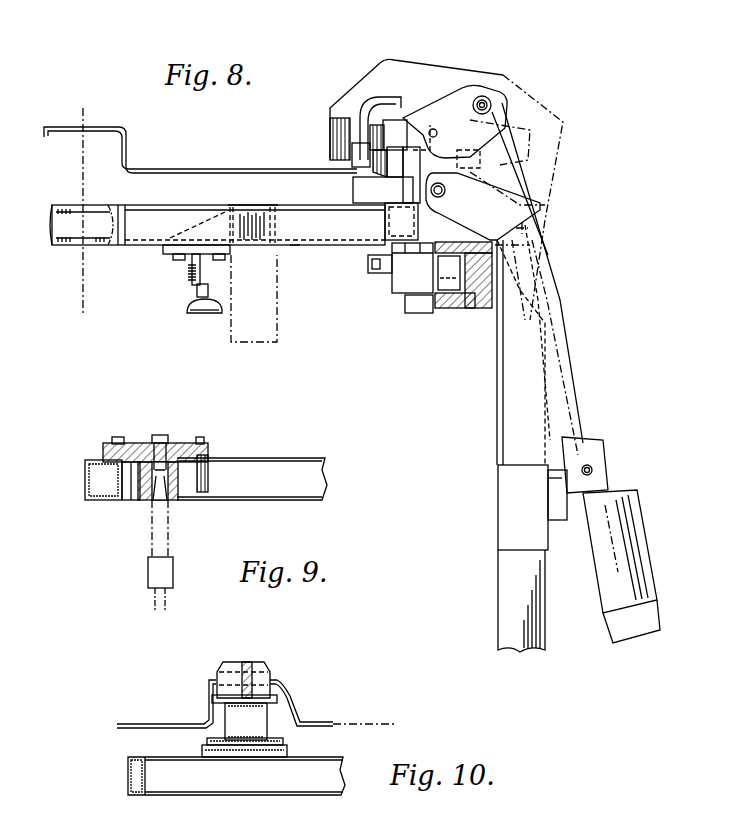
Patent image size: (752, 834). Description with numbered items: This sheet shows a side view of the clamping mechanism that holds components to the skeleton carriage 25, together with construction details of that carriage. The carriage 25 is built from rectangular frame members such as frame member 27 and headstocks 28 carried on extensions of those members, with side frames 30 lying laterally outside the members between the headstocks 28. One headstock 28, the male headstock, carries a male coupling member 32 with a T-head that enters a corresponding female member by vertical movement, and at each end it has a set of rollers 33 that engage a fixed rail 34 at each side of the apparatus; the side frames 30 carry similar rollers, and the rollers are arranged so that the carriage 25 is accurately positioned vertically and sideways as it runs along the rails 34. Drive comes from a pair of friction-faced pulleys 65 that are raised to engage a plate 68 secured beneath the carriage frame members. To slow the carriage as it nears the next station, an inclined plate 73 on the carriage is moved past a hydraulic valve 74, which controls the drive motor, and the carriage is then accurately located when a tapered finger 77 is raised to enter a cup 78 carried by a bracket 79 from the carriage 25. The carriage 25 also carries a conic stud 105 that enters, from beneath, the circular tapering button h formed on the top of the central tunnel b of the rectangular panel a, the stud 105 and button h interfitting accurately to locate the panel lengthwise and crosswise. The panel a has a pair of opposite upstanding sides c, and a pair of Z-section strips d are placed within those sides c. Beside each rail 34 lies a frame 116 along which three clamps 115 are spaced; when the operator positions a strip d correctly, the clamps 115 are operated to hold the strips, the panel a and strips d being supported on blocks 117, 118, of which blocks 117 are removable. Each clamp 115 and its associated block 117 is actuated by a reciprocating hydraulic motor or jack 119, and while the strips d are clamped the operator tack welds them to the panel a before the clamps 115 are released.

In FIG. 8, the skeleton carriage 25 is at (128, 252).
In FIG. 9, the skeleton carriage 25 is at (306, 451).
In FIG. 10, the rectangular frame member 27 is at (135, 775).
In FIG. 8, the headstock 28 is at (294, 232).
In FIG. 8, the side frame 30 is at (383, 222).
In FIG. 8, the male coupling member 32 is at (78, 230).
In FIG. 8, the rollers 33 is at (421, 315).
In FIG. 8, the rail 34 is at (466, 314).
In FIG. 8, the pulley 65 is at (241, 323).
In FIG. 8, the plate 68 is at (249, 270).
In FIG. 8, the inclined plate 73 is at (192, 276).
In FIG. 8, the hydraulic valve 74 is at (197, 311).
In FIG. 9, the tapered finger 77 is at (155, 505).
In FIG. 9, the cup 78 is at (137, 487).
In FIG. 9, the bracket 79 is at (138, 445).
In FIG. 10, the conic stud 105 is at (231, 668).
In FIG. 8, the clamp 115 is at (337, 137).
In FIG. 8, the frame 116 is at (496, 450).
In FIG. 8, the block 117 is at (380, 138).
In FIG. 8, the block 118 is at (357, 178).
In FIG. 8, the reciprocating hydraulic motor or jack 119 is at (612, 527).
In FIG. 8, the rectangular panel a is at (160, 172).
In FIG. 8, the central tunnel b is at (63, 128).
In FIG. 10, the central tunnel b is at (362, 722).
In FIG. 8, the upstanding side c is at (385, 162).
In FIG. 8, the Z-section strip d is at (378, 106).
In FIG. 10, the button h is at (297, 694).